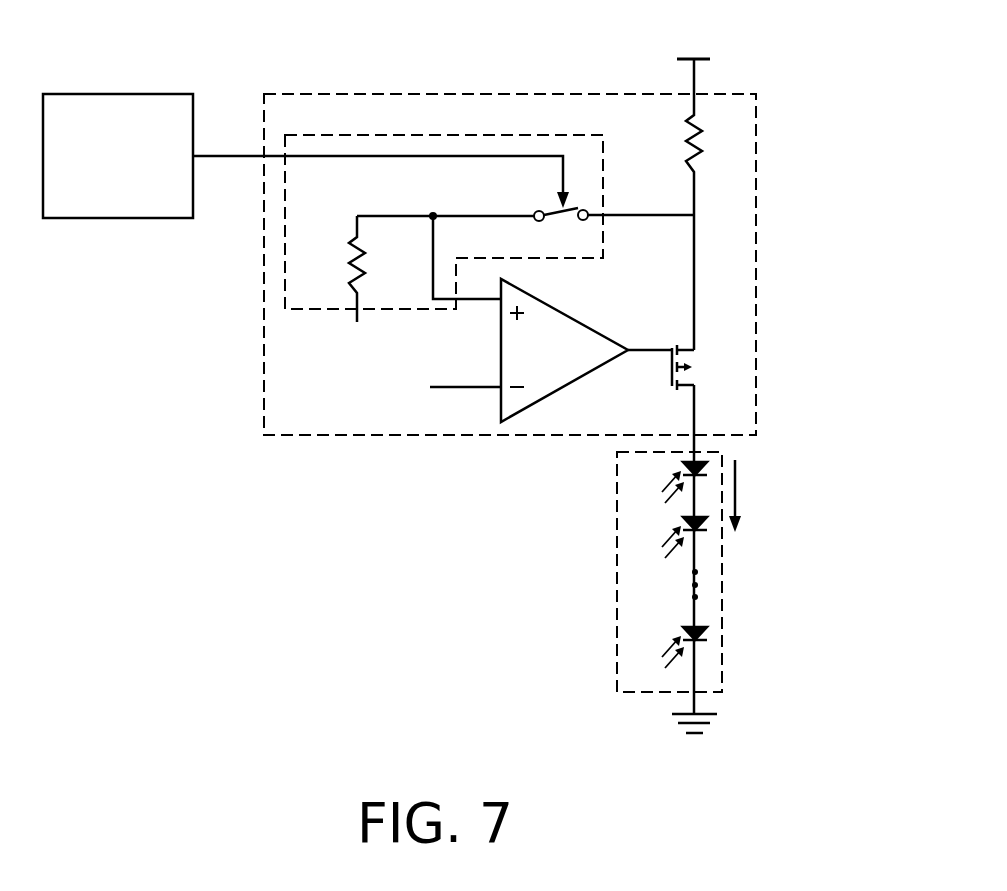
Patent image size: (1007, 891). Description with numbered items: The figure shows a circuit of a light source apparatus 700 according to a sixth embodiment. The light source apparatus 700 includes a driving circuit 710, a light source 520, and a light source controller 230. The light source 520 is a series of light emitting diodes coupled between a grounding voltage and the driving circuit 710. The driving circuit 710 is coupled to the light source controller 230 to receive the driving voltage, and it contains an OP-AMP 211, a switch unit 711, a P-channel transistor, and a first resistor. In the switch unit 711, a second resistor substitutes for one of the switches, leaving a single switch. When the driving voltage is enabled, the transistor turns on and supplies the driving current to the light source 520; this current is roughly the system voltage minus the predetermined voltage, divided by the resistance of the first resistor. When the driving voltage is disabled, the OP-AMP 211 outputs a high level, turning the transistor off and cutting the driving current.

The light source controller 230 is at (135, 218).
The driving circuit 710 is at (567, 365).
The switch unit 711 is at (410, 133).
The OP-AMP 211 is at (575, 318).
The light source 520 is at (722, 593).
The light source apparatus 700 is at (457, 399).